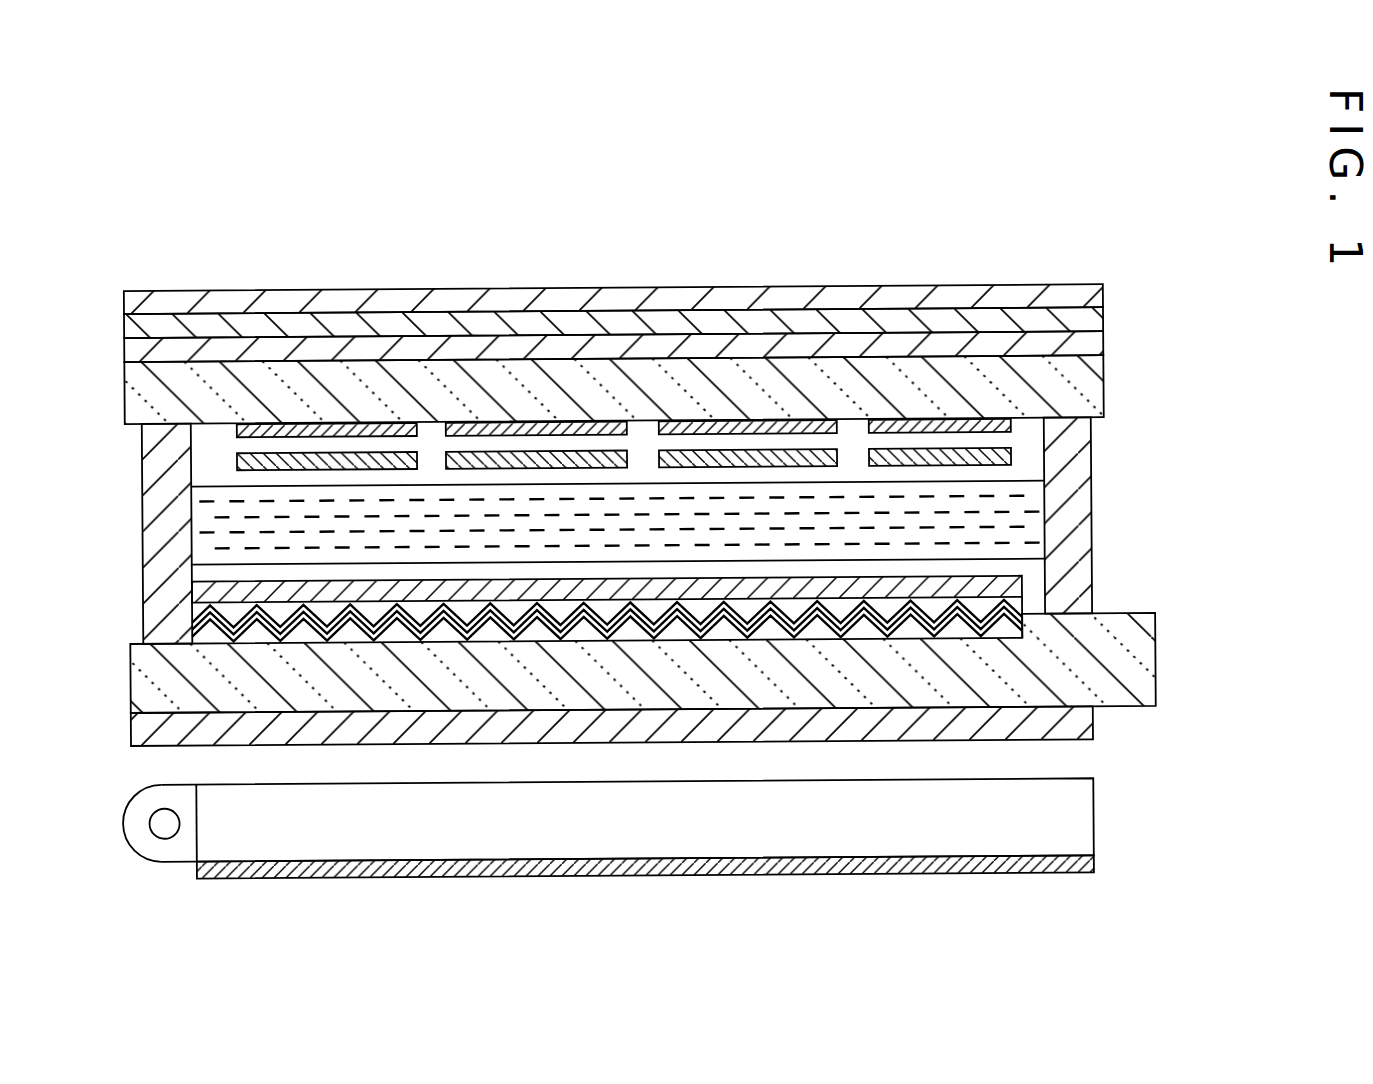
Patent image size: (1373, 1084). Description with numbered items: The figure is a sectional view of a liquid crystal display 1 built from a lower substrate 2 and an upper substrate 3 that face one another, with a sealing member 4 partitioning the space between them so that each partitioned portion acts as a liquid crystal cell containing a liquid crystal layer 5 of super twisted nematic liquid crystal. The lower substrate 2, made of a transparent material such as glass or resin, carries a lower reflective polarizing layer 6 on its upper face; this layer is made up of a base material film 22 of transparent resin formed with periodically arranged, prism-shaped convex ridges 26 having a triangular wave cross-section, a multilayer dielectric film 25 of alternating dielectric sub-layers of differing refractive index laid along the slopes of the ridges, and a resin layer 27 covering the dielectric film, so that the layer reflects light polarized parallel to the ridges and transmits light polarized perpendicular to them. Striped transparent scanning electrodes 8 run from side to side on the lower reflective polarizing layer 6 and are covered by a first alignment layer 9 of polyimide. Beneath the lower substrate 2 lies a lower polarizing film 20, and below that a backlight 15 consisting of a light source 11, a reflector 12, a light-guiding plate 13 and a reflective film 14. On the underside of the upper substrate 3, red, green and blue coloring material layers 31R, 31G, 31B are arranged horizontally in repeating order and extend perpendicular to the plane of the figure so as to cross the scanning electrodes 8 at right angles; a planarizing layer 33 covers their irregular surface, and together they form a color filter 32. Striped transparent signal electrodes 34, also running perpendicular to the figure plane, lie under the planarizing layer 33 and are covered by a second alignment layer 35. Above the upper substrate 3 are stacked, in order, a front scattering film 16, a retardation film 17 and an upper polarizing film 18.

The liquid crystal display 1 is at (635, 264).
The lower substrate 2 is at (1152, 668).
The upper substrate 3 is at (1093, 382).
The sealing member 4 is at (1082, 540).
The liquid crystal layer 5 is at (1045, 510).
The lower reflective polarizing layer 6 is at (150, 623).
The scanning electrodes 8 is at (1100, 602).
The first alignment layer 9 is at (1045, 568).
The light source 11 is at (148, 826).
The reflector 12 is at (140, 855).
The light-guiding plate 13 is at (1092, 818).
The reflective film 14 is at (1094, 875).
The backlight 15 is at (128, 770).
The front scattering film 16 is at (1093, 343).
The retardation film 17 is at (1093, 319).
The upper polarizing film 18 is at (1093, 296).
The lower polarizing film 20 is at (1094, 728).
The base material film 22 is at (585, 634).
The multilayer dielectric film 25 is at (533, 634).
The convex ridges 26 is at (607, 721).
The resin layer 27 is at (452, 634).
The red coloring material layer 31R is at (338, 425).
The green coloring material layer 31G is at (535, 428).
The blue coloring material layer 31B is at (763, 428).
The color filter 32 is at (200, 441).
The planarizing layer 33 is at (1045, 440).
The signal electrodes 34 is at (368, 458).
The second alignment layer 35 is at (1045, 466).